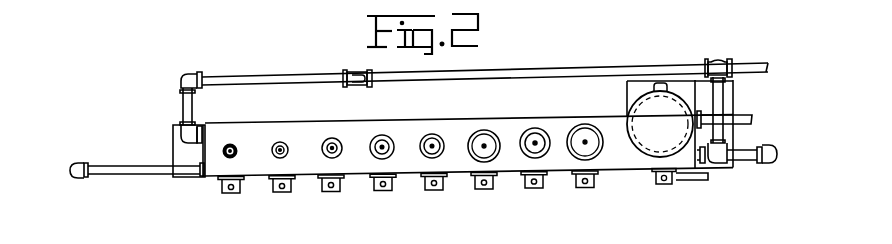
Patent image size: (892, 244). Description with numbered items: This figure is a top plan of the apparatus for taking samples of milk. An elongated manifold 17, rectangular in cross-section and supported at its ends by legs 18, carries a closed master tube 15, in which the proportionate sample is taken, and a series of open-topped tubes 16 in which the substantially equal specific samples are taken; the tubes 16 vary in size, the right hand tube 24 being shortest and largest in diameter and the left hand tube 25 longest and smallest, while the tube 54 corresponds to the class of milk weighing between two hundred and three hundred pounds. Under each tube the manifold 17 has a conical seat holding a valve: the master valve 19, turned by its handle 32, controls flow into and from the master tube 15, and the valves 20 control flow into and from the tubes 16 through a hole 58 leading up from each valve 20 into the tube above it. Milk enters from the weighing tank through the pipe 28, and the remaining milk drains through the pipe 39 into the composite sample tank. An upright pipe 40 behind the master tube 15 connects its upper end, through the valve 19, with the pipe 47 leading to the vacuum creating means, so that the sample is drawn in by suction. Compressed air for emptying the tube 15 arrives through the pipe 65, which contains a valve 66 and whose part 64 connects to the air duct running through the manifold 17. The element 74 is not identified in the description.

The master tube 15 is at (636, 104).
The tubes 16 is at (324, 141).
The manifold 17 is at (460, 164).
The legs 18 is at (727, 166).
The master valve 19 is at (667, 187).
The valves 20 is at (273, 192).
The right hand tube 24 is at (581, 173).
The left hand tube 25 is at (228, 158).
The pipe 28 is at (757, 163).
The handle 32 is at (688, 181).
The pipe 39 is at (120, 177).
The upright pipe 40 is at (661, 84).
The pipe 47 is at (752, 118).
The tube 54 is at (484, 130).
The hole 58 is at (433, 150).
The part of pipe 64 is at (191, 108).
The pipe 65 is at (513, 71).
The valve 66 is at (354, 71).
The vertical pipe 74 is at (723, 94).